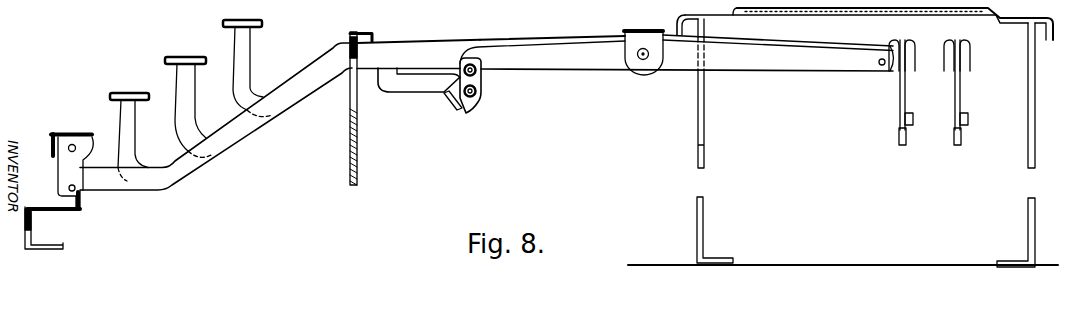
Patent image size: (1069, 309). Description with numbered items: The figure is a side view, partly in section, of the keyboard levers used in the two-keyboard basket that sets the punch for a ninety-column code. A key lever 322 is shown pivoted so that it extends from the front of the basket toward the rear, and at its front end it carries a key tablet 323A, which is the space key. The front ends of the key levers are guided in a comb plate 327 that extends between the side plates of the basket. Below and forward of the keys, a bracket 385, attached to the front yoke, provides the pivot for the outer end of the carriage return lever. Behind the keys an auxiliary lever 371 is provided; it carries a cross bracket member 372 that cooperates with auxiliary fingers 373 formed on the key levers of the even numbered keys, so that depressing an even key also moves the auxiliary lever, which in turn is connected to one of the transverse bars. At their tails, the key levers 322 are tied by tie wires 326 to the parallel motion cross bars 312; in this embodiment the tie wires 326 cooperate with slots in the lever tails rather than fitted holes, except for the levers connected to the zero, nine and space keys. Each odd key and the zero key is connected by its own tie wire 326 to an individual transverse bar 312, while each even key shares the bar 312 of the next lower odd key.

The key lever 322 is at (318, 63).
The key tablet 323A is at (62, 132).
The bracket 385 is at (50, 214).
The comb plate 327 is at (358, 152).
The auxiliary finger 373 is at (406, 93).
The cross bracket member 372 is at (461, 109).
The auxiliary lever 371 is at (605, 69).
The tie wire 326 is at (906, 100).
The parallel motion cross bar 312 is at (956, 136).